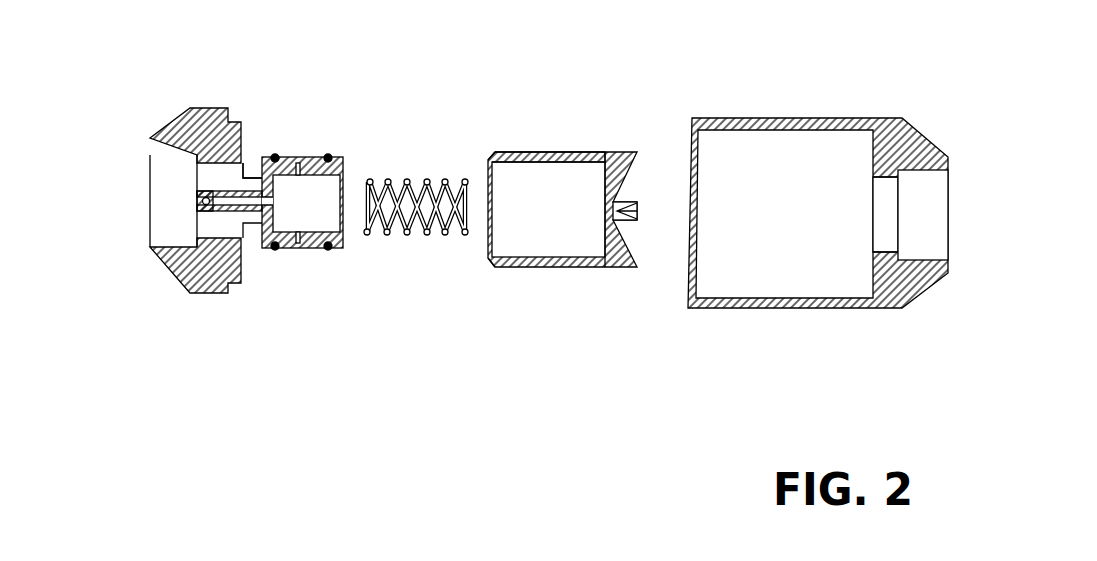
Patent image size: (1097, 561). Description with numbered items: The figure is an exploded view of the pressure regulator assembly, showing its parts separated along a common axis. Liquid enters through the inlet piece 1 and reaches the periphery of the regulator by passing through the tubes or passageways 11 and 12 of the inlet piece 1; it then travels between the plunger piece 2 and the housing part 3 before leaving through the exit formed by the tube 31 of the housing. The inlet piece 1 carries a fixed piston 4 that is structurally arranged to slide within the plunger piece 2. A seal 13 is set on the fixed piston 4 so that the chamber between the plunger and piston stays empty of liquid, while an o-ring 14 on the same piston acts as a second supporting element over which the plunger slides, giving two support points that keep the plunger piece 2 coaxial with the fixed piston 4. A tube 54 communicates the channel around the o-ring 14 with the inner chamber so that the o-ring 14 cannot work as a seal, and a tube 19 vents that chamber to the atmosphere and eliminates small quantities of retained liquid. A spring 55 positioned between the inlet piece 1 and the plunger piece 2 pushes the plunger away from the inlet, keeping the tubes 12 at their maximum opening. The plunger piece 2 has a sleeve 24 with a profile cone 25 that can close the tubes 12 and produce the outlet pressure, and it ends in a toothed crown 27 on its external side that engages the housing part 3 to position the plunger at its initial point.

The inlet piece 1 is at (171, 203).
The plunger piece 2 is at (523, 231).
The housing part 3 is at (818, 236).
The fixed piston 4 is at (303, 229).
The tube 11 is at (220, 182).
The tube 12 is at (255, 167).
The seal 13 is at (278, 154).
The o-ring 14 is at (330, 154).
The tube 19 is at (217, 192).
The sleeve 24 is at (503, 152).
The profile cone 25 is at (490, 150).
The toothed crown 27 is at (600, 268).
The tube 31 is at (883, 202).
The tube 54 is at (293, 247).
The spring 55 is at (427, 232).